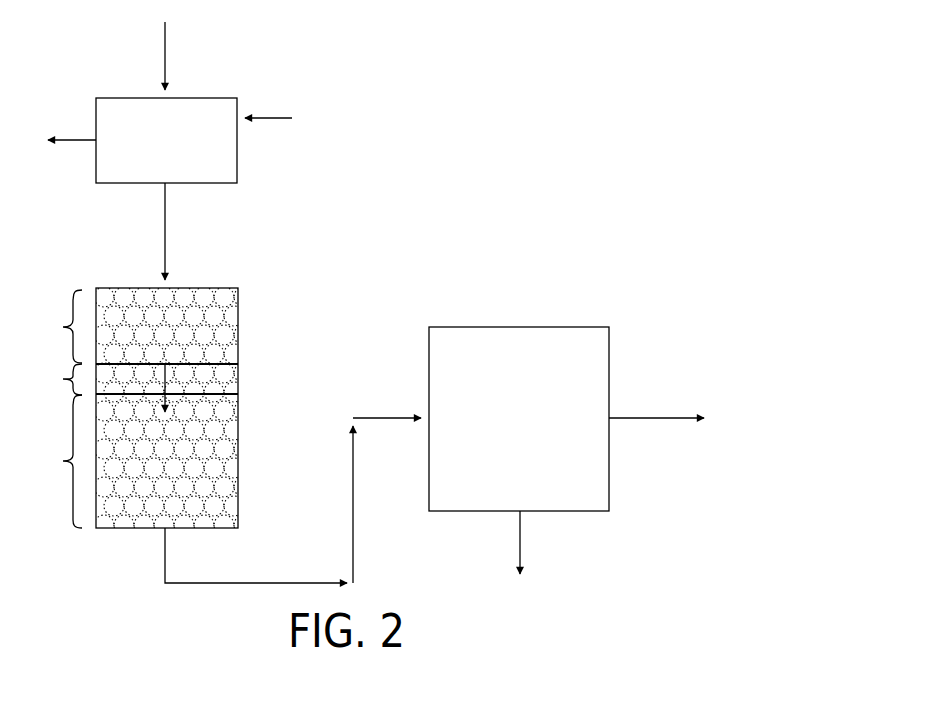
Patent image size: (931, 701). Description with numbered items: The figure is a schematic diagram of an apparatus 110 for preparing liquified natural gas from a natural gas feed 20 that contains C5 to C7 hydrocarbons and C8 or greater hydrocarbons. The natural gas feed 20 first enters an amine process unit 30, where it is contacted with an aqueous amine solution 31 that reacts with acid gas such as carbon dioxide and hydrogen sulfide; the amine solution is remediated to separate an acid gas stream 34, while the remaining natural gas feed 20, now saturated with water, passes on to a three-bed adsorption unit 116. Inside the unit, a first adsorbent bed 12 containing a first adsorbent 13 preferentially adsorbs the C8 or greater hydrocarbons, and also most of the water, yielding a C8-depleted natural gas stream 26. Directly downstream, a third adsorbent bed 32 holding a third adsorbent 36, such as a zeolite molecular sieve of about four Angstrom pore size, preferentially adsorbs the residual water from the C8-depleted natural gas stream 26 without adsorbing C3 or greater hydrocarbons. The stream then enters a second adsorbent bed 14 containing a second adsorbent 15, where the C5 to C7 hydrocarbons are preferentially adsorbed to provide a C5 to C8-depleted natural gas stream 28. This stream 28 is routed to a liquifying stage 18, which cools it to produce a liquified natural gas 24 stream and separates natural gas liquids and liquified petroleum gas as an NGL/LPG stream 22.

The apparatus for preparing liquified natural gas 110 is at (518, 82).
The three-bed adsorption unit 116 is at (280, 283).
The first adsorbent bed 12 is at (56, 326).
The first adsorbent 13 is at (222, 315).
The third adsorbent bed 32 is at (134, 388).
The third adsorbent 36 is at (228, 370).
The C8-depleted natural gas stream 26 is at (228, 387).
The second adsorbent bed 14 is at (56, 461).
The second adsorbent 15 is at (228, 442).
The natural gas feed 20 is at (168, 43).
The amine process unit 30 is at (237, 166).
The aqueous amine solution 31 is at (277, 113).
The acid gas stream 34 is at (70, 137).
The C5 to C8-depleted natural gas stream 28 is at (245, 580).
The liquifying stage 18 is at (520, 323).
The liquified natural gas 24 is at (662, 415).
The NGL/LPG stream 22 is at (522, 546).